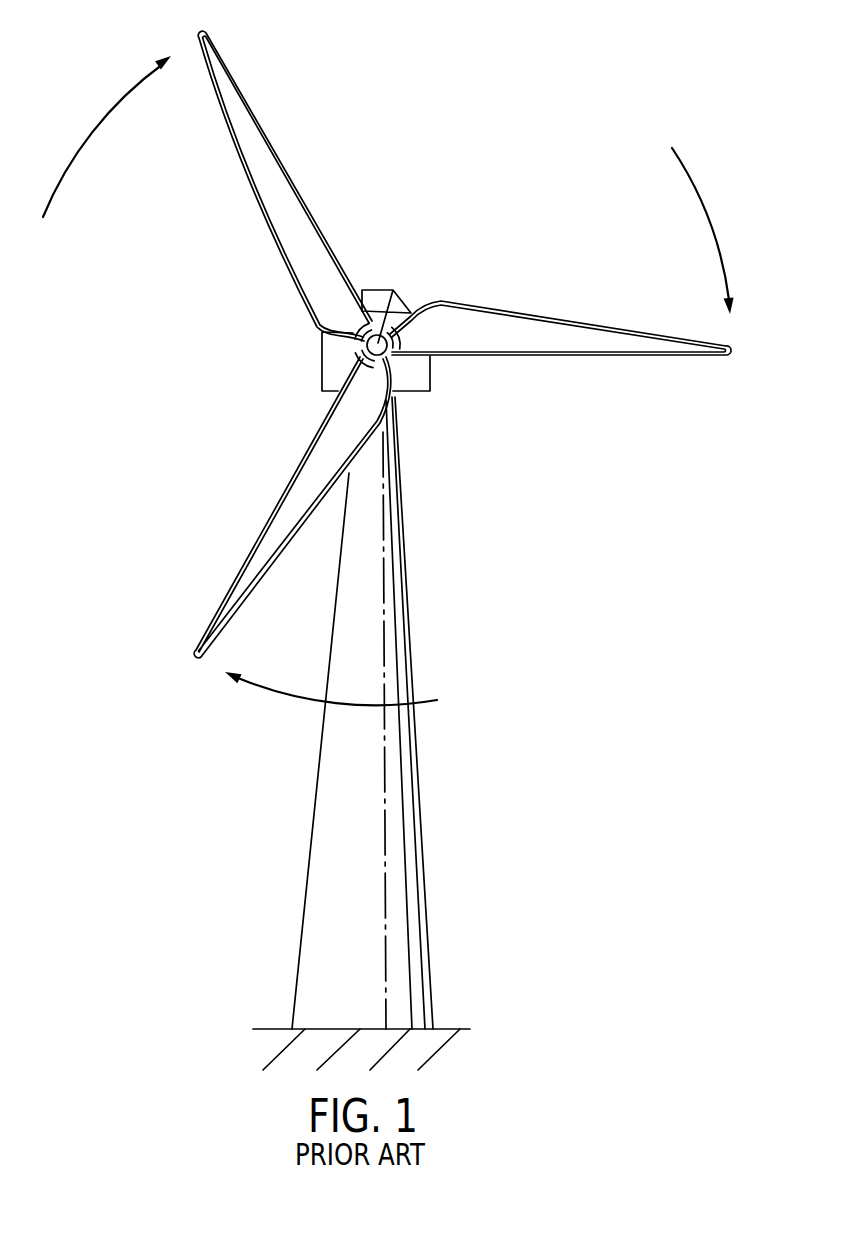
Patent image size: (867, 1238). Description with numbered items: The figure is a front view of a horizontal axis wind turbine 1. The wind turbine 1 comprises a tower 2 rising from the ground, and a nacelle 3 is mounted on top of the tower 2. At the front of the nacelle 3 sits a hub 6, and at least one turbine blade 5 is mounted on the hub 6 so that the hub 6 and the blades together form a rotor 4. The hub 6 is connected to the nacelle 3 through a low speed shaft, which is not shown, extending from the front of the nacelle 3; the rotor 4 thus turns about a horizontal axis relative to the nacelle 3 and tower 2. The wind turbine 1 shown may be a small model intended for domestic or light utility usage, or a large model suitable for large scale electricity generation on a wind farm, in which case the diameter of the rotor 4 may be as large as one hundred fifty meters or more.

The wind turbine 1 is at (548, 859).
The tower 2 is at (418, 753).
The nacelle 3 is at (423, 378).
The rotor 4 is at (528, 170).
The turbine blade 5 is at (550, 325).
The hub 6 is at (395, 290).